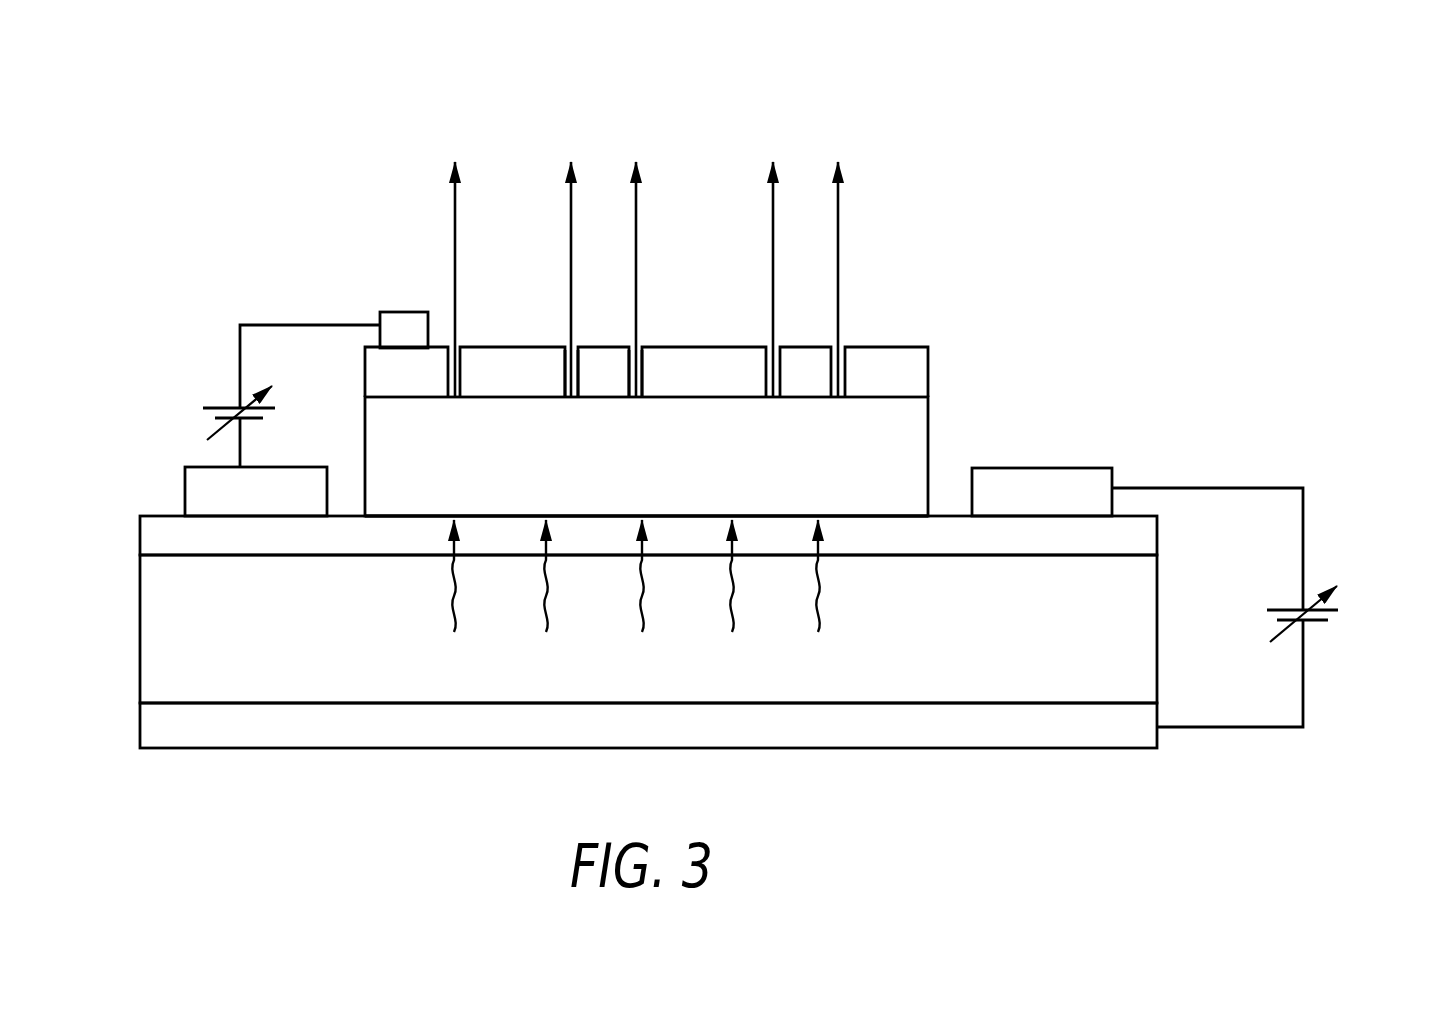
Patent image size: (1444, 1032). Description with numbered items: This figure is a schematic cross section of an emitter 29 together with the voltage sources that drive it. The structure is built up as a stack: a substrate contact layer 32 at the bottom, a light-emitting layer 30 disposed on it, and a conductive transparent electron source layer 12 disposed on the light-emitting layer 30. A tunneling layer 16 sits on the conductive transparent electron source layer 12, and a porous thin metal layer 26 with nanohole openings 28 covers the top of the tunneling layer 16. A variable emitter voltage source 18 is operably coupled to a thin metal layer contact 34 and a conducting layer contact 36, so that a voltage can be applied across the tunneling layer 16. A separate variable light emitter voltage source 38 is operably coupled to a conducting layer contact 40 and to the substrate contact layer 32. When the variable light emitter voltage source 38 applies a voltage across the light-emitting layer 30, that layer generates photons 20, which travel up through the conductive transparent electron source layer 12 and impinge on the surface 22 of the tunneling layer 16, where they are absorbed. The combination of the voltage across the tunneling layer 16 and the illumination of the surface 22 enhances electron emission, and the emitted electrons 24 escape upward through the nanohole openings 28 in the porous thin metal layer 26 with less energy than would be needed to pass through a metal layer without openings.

The conductive transparent electron source layer 12 is at (140, 533).
The tunneling layer 16 is at (928, 443).
The variable emitter voltage source 18 is at (216, 392).
The photons 20 is at (860, 617).
The surface 22 is at (411, 521).
The electrons 24 is at (918, 275).
The porous thin metal layer 26 is at (928, 373).
The nanohole openings 28 is at (631, 338).
The emitter 29 is at (935, 146).
The light-emitting layer 30 is at (140, 645).
The substrate contact layer 32 is at (140, 723).
The thin metal layer contact 34 is at (400, 312).
The conducting layer contact 36 is at (185, 482).
The variable light emitter voltage source 38 is at (1325, 630).
The conducting layer contact 40 is at (1112, 476).